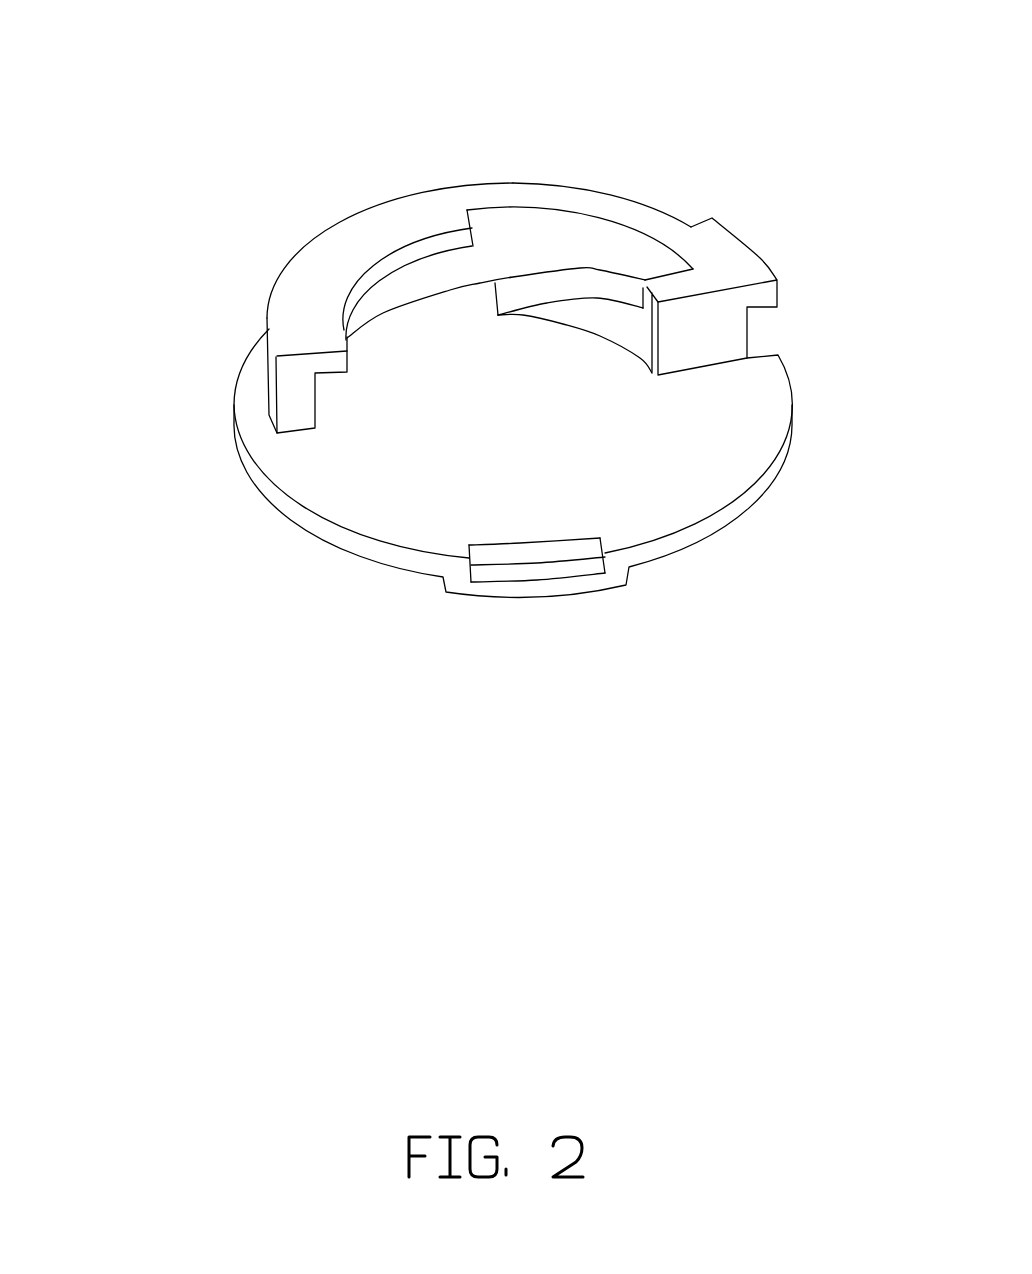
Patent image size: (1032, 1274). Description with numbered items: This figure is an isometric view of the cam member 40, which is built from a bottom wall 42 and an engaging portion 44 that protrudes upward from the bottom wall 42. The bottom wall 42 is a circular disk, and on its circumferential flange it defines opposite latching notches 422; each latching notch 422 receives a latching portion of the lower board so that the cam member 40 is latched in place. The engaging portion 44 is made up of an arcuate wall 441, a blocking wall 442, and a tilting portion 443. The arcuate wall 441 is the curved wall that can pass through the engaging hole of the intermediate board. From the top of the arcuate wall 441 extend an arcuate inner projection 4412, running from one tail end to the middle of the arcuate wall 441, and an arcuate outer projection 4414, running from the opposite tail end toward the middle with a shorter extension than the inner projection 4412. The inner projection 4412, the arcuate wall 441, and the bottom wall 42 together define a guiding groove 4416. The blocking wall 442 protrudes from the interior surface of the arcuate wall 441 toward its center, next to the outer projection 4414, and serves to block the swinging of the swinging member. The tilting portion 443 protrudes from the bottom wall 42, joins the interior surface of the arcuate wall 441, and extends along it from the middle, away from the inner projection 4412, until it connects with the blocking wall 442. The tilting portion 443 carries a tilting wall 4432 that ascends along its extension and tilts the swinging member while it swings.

The cam member 40 is at (372, 97).
The bottom wall 42 is at (745, 437).
The latching notch 422 is at (545, 558).
The engaging portion 44 is at (783, 134).
The arcuate wall 441 is at (531, 228).
The blocking wall 442 is at (672, 290).
The tilting portion 443 is at (592, 315).
The arcuate inner projection 4412 is at (458, 228).
The arcuate outer projection 4414 is at (743, 263).
The guiding groove 4416 is at (327, 389).
The tilting wall 4432 is at (542, 290).